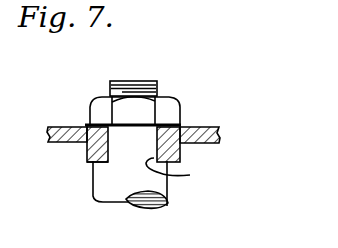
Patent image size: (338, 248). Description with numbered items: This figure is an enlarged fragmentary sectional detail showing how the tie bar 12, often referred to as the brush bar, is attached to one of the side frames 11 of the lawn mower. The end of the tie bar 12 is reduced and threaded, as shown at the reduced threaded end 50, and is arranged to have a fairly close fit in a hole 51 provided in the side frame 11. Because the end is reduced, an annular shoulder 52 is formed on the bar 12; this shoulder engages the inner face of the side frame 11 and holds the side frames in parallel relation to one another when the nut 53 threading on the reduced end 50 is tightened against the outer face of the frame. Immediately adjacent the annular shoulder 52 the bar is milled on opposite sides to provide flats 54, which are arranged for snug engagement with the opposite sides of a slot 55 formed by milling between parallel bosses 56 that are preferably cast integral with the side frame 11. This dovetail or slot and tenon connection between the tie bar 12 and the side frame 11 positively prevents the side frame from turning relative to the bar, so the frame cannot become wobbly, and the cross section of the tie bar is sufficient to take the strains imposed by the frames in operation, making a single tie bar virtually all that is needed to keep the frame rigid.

The side frame 11 is at (207, 128).
The tie bar 12 is at (158, 184).
The reduced threaded end 50 is at (152, 82).
The hole 51 is at (181, 129).
The annular shoulder 52 is at (128, 137).
The nut 53 is at (90, 100).
The flat 54 is at (179, 169).
The slot 55 is at (103, 152).
The boss 56 is at (104, 134).